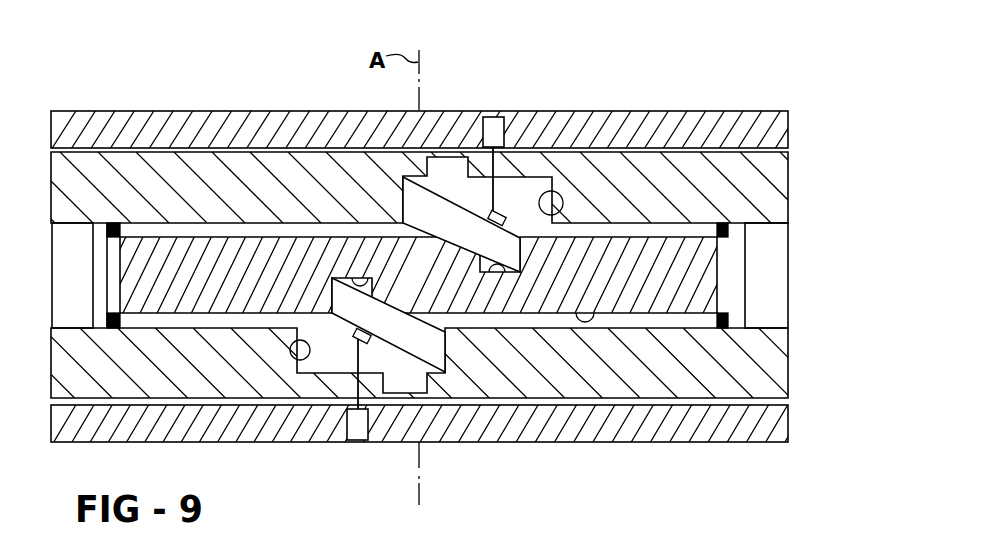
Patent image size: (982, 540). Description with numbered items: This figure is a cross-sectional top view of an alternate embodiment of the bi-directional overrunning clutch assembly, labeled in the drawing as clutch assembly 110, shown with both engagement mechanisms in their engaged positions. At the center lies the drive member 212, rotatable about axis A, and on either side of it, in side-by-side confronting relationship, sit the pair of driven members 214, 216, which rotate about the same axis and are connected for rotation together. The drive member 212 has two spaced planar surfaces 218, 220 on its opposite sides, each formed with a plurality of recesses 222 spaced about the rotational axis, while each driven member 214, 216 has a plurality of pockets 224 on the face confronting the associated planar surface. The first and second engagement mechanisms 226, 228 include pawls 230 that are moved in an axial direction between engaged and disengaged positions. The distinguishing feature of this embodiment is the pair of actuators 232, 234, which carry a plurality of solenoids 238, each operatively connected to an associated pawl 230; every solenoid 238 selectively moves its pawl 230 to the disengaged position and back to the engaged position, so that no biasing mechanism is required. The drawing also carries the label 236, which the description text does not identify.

The actuator assembly 110 is at (70, 53).
The drive member 212 is at (756, 277).
The driven member 214 is at (798, 186).
The driven member 216 is at (795, 392).
The planar surface 218 is at (241, 228).
The planar surface 220 is at (590, 312).
The recesses 222 is at (512, 279).
The pockets 224 is at (563, 208).
The first engagement mechanism 226 is at (383, 192).
The second engagement mechanism 228 is at (478, 376).
The pawl 230 is at (447, 226).
The actuator 232 is at (225, 106).
The actuator 234 is at (655, 448).
The outer surface 236 is at (658, 110).
The solenoid 238 is at (506, 136).